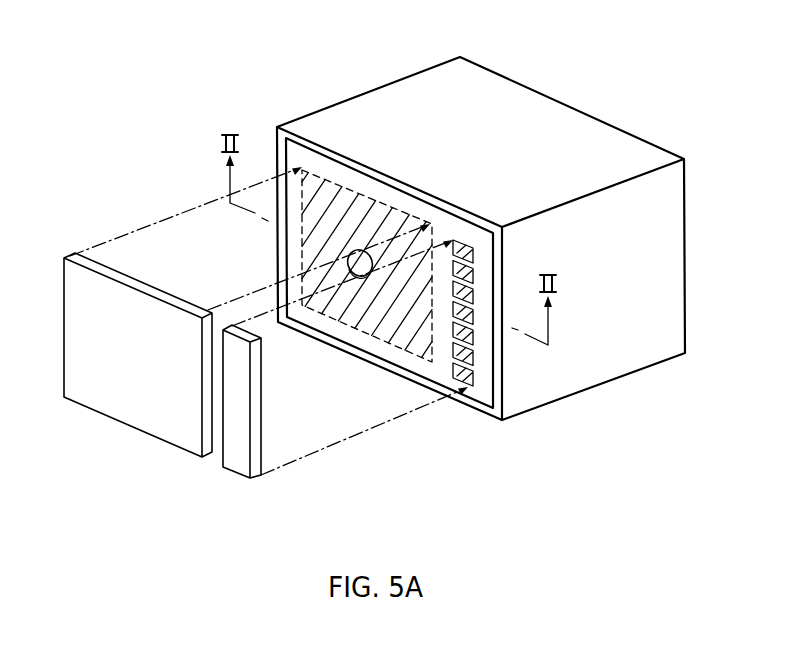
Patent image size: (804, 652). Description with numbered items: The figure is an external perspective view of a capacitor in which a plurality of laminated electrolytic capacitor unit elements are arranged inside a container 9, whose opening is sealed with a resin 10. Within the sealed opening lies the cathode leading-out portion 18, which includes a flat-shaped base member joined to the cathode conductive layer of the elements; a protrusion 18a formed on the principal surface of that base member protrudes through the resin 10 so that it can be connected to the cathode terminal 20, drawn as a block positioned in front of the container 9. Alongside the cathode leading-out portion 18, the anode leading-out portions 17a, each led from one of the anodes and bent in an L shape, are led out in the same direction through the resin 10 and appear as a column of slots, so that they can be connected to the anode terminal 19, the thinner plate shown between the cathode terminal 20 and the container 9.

The container 9 is at (557, 128).
The resin 10 is at (292, 153).
The cathode leading-out portion 18 is at (334, 208).
The protrusion 18a is at (358, 249).
The anode leading-out portion 17a is at (467, 360).
The anode terminal 19 is at (238, 460).
The cathode terminal 20 is at (122, 395).